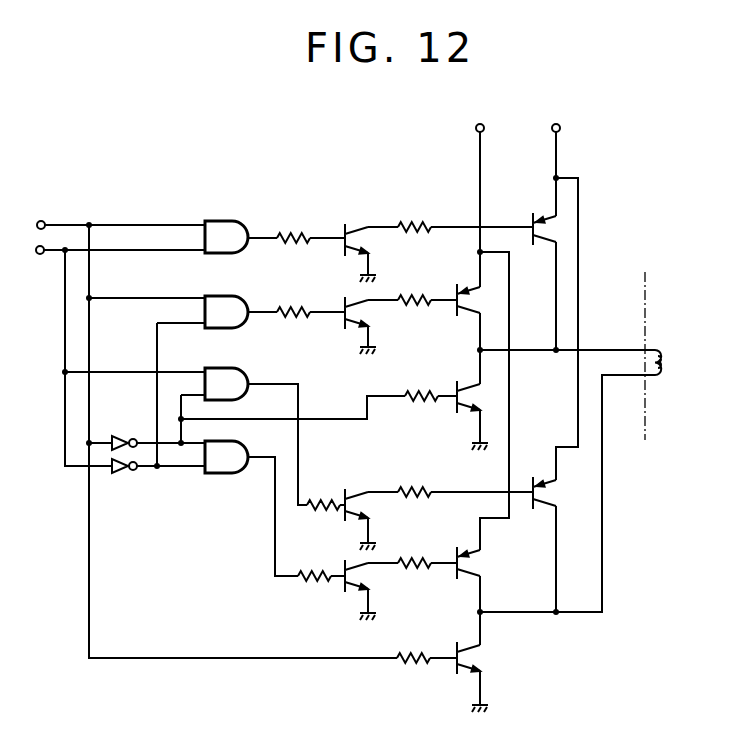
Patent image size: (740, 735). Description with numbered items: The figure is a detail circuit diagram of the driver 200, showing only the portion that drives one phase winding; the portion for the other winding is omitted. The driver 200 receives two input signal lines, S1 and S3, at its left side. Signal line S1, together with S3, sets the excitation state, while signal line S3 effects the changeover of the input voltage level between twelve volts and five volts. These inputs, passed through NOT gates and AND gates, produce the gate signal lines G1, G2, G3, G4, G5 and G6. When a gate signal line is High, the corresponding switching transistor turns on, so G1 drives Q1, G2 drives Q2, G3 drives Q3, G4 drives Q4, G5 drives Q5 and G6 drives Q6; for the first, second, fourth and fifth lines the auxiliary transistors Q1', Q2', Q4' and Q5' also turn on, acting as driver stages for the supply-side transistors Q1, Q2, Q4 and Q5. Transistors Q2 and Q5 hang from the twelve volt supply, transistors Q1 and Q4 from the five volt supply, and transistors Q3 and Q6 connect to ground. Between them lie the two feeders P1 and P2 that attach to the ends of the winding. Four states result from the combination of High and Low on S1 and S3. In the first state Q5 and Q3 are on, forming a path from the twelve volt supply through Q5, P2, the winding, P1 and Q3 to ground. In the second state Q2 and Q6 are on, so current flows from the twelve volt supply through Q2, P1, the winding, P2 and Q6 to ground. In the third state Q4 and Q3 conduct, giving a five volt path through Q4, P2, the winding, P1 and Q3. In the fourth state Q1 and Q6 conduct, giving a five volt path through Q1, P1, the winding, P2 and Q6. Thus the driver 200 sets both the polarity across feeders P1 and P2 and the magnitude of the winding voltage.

The driver 200 is at (77, 627).
The signal line S1 is at (115, 211).
The signal line S3 is at (115, 266).
The signal line G1 is at (275, 232).
The signal line G2 is at (275, 308).
The signal line G3 is at (331, 439).
The signal line G4 is at (275, 510).
The signal line G5 is at (253, 551).
The signal line G6 is at (344, 649).
The transistor Q1' is at (432, 234).
The transistor Q2' is at (385, 309).
The transistor Q4' is at (433, 507).
The transistor Q5' is at (388, 584).
The switching transistor Q1 is at (540, 264).
The switching transistor Q2 is at (461, 301).
The transistor Q3 is at (464, 400).
The transistor Q4 is at (546, 395).
The transistor Q5 is at (475, 432).
The transistor Q6 is at (466, 662).
The feeder P1 is at (567, 335).
The feeder P2 is at (567, 493).